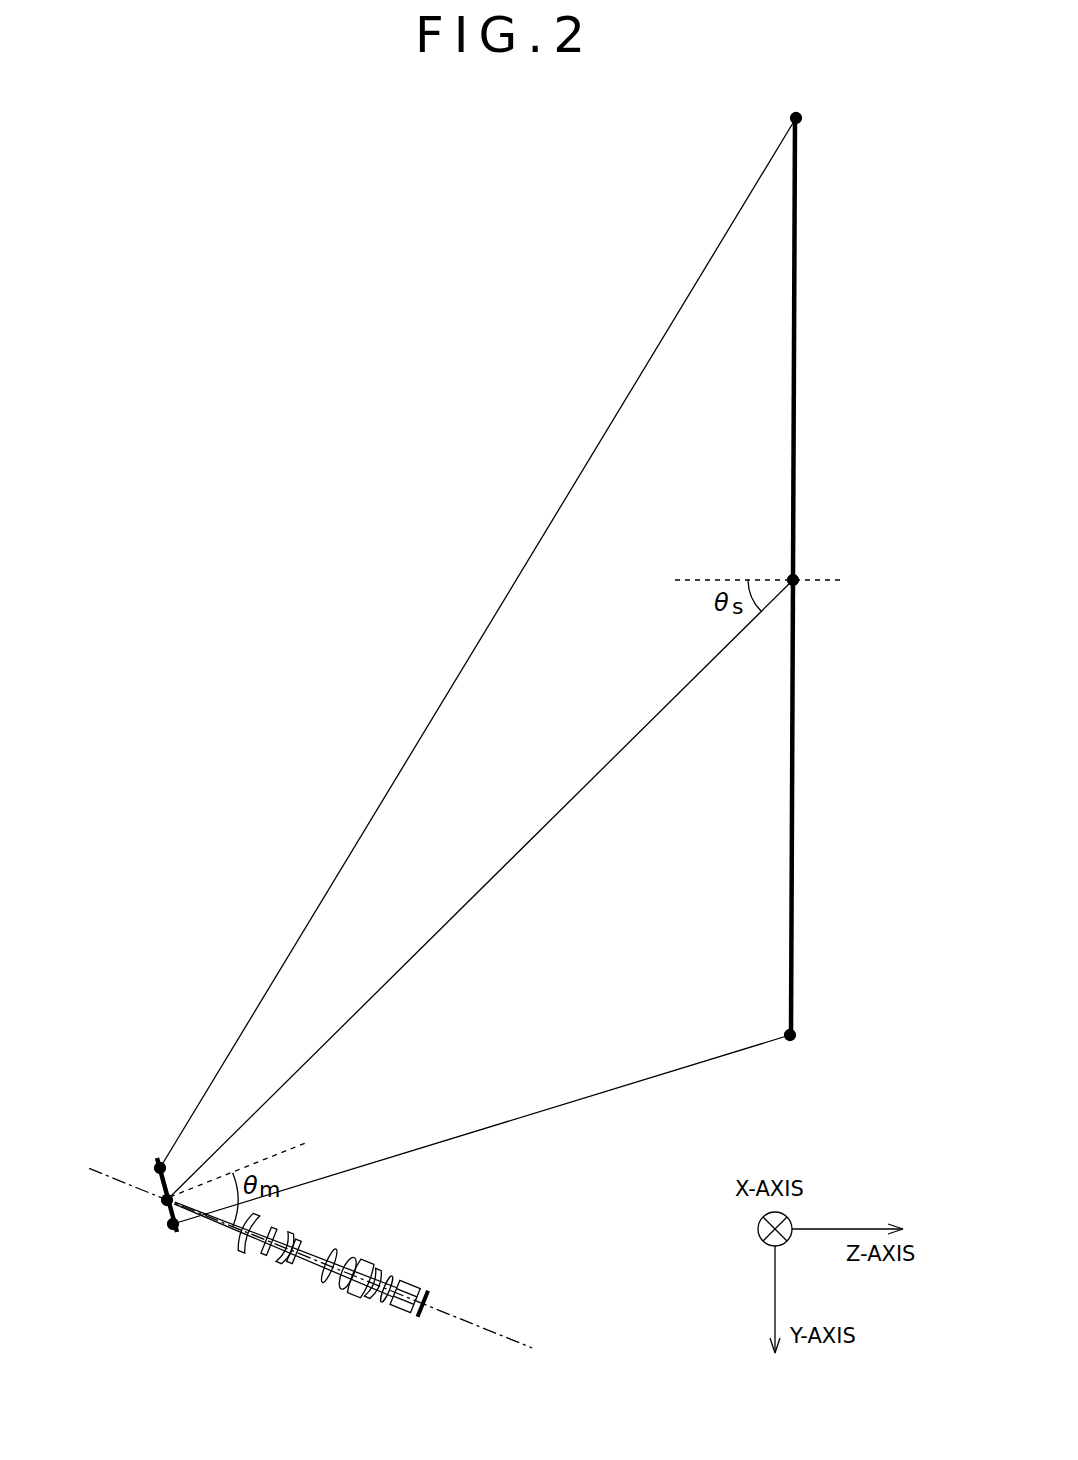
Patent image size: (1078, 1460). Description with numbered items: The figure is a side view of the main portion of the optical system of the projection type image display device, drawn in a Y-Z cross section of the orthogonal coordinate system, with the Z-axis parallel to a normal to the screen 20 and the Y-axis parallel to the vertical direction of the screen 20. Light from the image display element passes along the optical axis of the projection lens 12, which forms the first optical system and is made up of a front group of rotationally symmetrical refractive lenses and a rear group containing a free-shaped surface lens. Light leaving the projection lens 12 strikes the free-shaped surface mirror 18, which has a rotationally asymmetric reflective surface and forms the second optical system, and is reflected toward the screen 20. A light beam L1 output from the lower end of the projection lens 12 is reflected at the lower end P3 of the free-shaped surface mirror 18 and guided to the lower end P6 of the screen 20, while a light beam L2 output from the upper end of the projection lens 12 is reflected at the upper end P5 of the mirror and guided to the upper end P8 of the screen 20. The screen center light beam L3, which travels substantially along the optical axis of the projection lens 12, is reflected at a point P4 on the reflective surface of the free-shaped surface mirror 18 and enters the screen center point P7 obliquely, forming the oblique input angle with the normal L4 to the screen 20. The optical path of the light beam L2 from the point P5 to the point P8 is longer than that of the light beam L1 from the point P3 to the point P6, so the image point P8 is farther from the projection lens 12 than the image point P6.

The projection lens 12 is at (311, 1258).
The free-shaped surface mirror 18 is at (158, 1163).
The screen 20 is at (797, 417).
The light beam L1 is at (617, 1090).
The light beam L2 is at (463, 668).
The screen center light beam L3 is at (548, 822).
The normal L4 is at (712, 572).
The lower end of the free-shaped surface mirror P3 is at (170, 1228).
The point on the reflective surface P4 is at (163, 1200).
The upper end of the free-shaped surface mirror P5 is at (155, 1170).
The lower end of the screen P6 is at (795, 1035).
The point of the screen center P7 is at (797, 584).
The upper end of the screen P8 is at (800, 120).